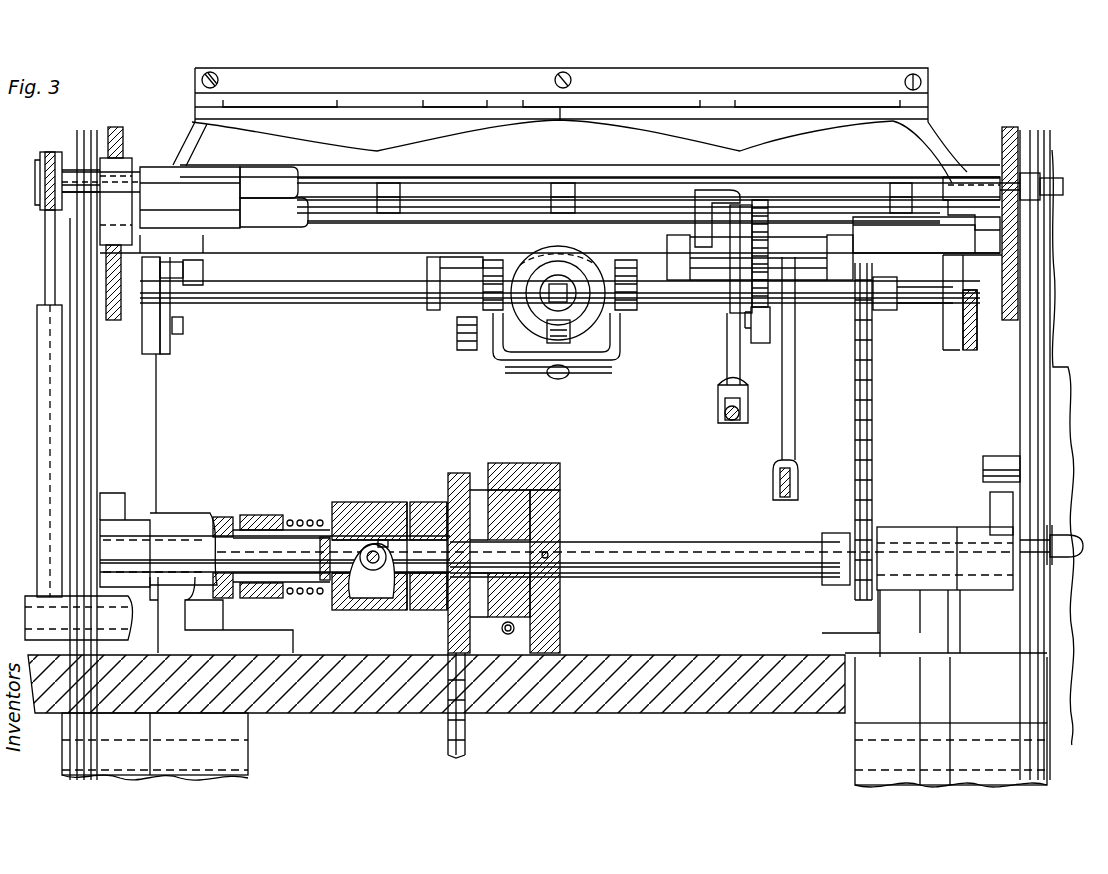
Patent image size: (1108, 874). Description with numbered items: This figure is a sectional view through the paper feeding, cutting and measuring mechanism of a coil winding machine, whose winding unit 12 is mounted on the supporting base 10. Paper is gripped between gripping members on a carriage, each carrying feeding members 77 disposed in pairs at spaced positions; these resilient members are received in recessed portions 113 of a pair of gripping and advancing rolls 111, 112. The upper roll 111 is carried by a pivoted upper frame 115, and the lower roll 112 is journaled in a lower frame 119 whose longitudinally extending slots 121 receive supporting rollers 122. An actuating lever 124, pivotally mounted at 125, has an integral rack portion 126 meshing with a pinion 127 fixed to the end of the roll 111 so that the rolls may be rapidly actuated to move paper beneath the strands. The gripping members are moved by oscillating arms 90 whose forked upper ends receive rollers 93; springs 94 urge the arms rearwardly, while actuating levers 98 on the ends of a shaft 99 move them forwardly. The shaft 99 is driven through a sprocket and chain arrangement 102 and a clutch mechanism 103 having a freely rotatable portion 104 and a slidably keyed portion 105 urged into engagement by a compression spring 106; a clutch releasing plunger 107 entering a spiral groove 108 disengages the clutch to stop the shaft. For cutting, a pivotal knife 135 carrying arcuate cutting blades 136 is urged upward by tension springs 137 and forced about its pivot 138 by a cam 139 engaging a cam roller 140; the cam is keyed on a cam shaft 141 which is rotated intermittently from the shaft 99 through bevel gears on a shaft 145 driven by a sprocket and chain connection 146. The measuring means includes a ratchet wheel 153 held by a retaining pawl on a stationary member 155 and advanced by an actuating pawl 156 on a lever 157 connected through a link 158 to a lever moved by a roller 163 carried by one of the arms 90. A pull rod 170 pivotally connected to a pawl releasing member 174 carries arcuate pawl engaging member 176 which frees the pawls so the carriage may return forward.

The supporting base 10 is at (302, 660).
The winding unit 12 is at (521, 168).
The feeding members 77 is at (388, 197).
The oscillating arms 90 is at (72, 280).
The rollers 93 is at (1042, 170).
The springs 94 is at (1035, 582).
The actuating levers 98 is at (116, 493).
The shaft 99 is at (642, 545).
The sprocket and chain arrangement 102 is at (460, 725).
The clutch mechanism 103 is at (410, 482).
The freely rotatable clutch portion 104 is at (503, 480).
The slidably keyed clutch portion 105 is at (357, 510).
The compression spring 106 is at (300, 518).
The clutch releasing plunger 107 is at (370, 570).
The spiral groove 108 is at (383, 585).
The gripping and advancing roll 111 is at (275, 176).
The gripping and advancing roll 112 is at (290, 222).
The recessed portions 113 is at (243, 185).
The upper frame 115 is at (117, 130).
The lower frame 119 is at (118, 336).
The longitudinally extending slots 121 is at (1010, 228).
The supporting rollers 122 is at (1012, 238).
The actuating lever 124 is at (46, 354).
The pivot 125 is at (22, 600).
The rack portion 126 is at (52, 208).
The pinion 127 is at (50, 178).
The pivotal knife 135 is at (440, 88).
The cutting blades 136 is at (345, 118).
The tension springs 137 is at (490, 262).
The pivot 138 is at (693, 293).
The cam 139 is at (592, 332).
The cam roller 140 is at (560, 348).
The cam shaft 141 is at (562, 280).
The shaft 145 is at (928, 297).
The sprocket and chain connection 146 is at (862, 413).
The ratchet wheel 153 is at (762, 250).
The stationary member 155 is at (720, 200).
The actuating pawl 156 is at (760, 323).
The lever 157 is at (790, 400).
The link 158 is at (778, 487).
The roller 163 is at (997, 462).
The pull rod 170 is at (722, 416).
The pawl releasing member 174 is at (724, 368).
The pawl engaging member 176 is at (730, 332).